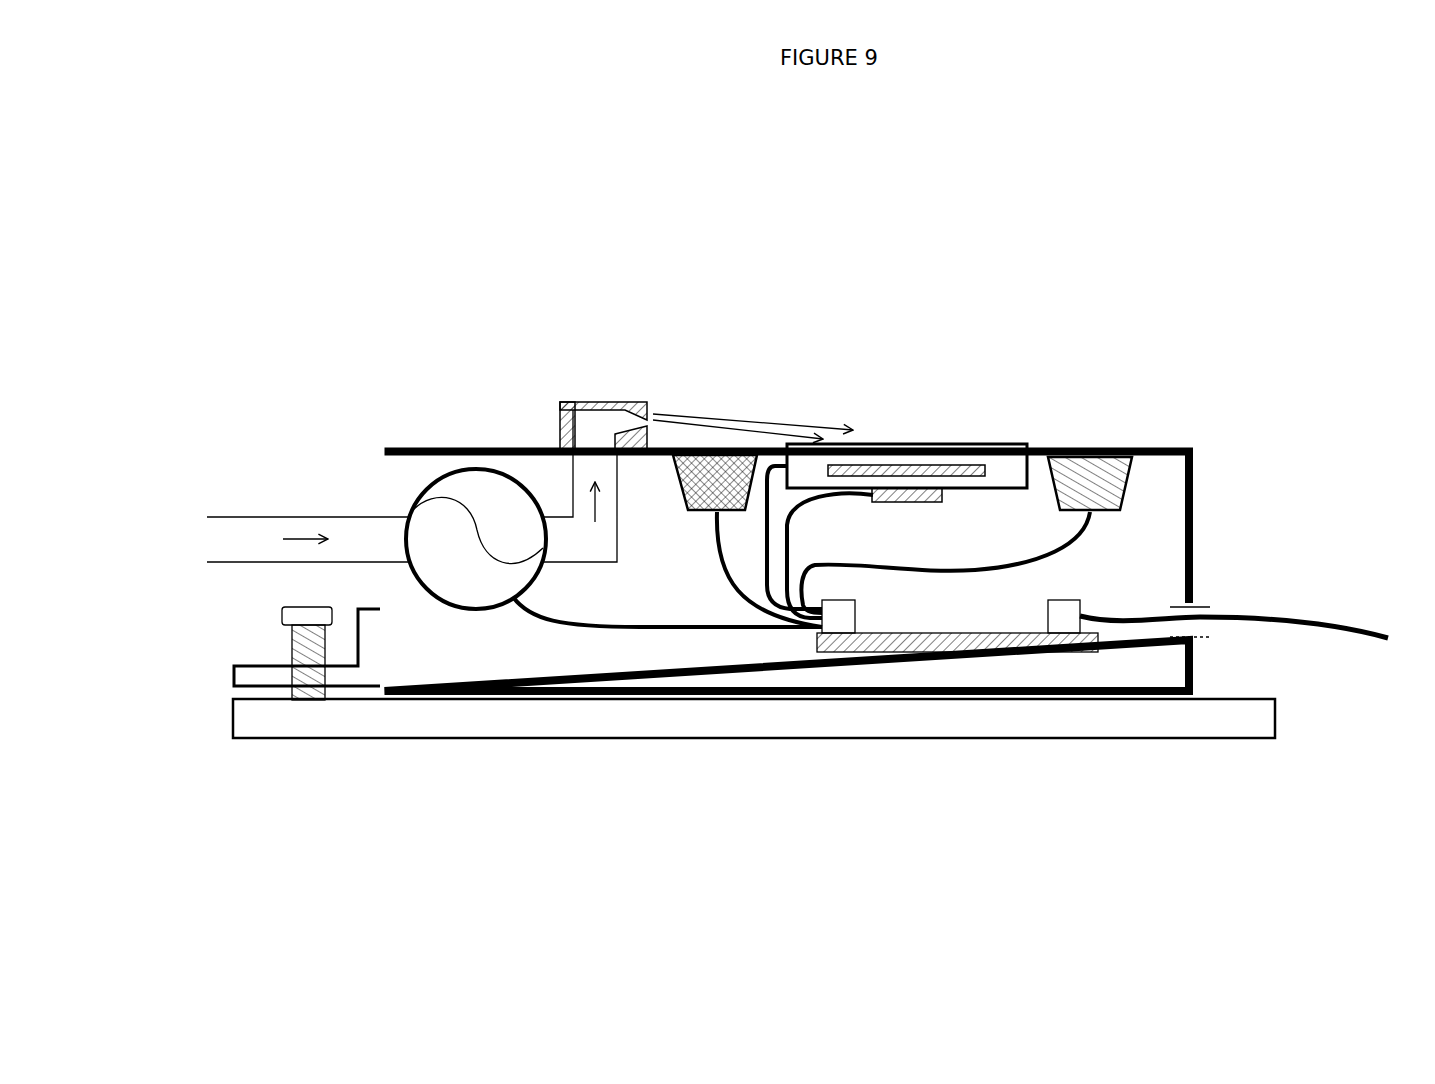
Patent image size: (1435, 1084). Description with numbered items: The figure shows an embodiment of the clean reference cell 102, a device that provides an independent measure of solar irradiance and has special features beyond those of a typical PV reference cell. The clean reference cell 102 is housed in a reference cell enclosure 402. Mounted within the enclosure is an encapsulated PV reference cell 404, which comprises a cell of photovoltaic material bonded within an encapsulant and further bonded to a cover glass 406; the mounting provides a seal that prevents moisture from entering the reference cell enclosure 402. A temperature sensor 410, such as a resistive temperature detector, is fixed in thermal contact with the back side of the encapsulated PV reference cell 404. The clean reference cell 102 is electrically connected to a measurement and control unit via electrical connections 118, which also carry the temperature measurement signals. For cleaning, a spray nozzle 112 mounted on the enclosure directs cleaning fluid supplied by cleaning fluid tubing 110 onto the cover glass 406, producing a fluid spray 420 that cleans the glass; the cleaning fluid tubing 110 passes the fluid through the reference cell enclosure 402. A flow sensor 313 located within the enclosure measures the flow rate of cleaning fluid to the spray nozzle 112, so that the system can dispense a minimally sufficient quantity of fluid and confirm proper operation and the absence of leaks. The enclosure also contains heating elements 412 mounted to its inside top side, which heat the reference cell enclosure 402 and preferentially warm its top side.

The clean reference cell 102 is at (433, 237).
The cleaning fluid tubing 110 is at (337, 520).
The spray nozzle 112 is at (637, 397).
The electrical connections 118 is at (1235, 613).
The flow sensor 313 is at (440, 468).
The reference cell enclosure 402 is at (1160, 445).
The encapsulated PV reference cell 404 is at (938, 463).
The cover glass 406 is at (885, 437).
The temperature sensor 410 is at (913, 490).
The heating element 412 is at (702, 513).
The fluid spray 420 is at (730, 417).